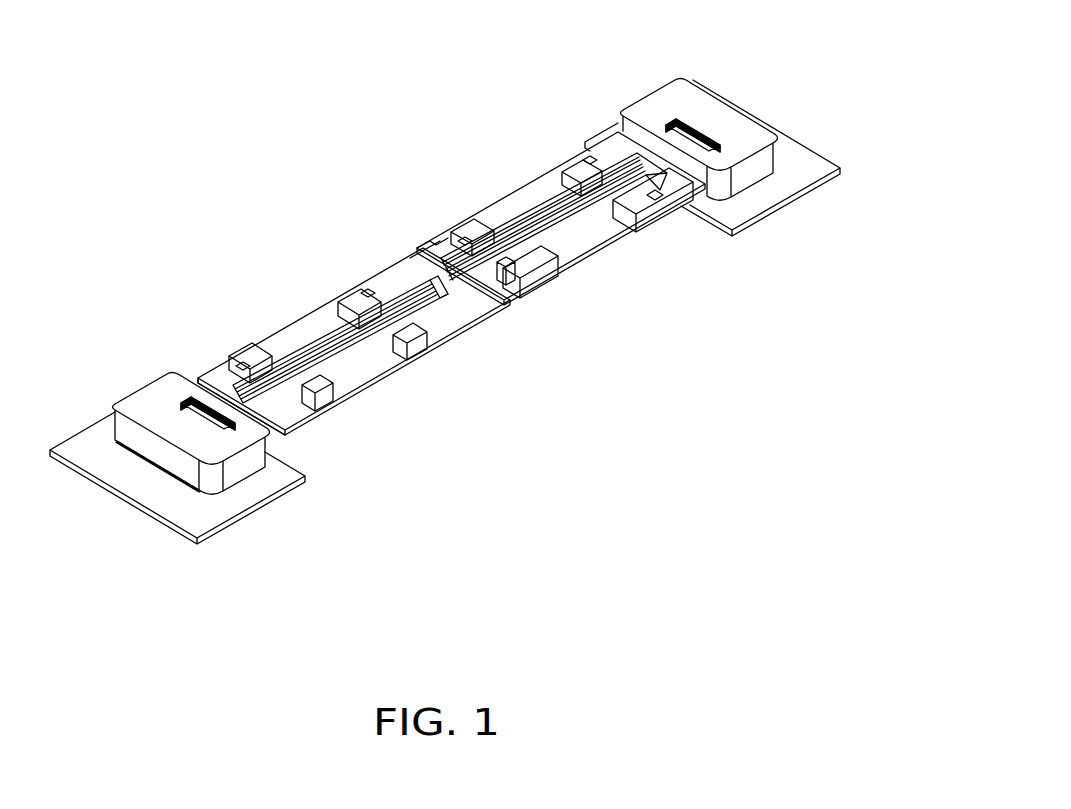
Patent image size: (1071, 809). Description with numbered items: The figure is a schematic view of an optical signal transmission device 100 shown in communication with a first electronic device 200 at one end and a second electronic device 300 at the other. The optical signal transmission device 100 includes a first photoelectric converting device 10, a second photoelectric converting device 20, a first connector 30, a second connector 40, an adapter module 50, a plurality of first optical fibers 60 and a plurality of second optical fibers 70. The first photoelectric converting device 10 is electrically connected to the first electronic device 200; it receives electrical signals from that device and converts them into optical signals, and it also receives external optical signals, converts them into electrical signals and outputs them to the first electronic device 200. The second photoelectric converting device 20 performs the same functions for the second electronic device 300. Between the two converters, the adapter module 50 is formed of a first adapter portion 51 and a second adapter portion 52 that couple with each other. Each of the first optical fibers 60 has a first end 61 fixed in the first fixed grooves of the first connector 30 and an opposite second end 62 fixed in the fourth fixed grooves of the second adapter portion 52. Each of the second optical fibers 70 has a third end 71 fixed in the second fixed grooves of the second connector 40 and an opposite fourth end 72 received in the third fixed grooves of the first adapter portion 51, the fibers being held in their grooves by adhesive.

The optical signal transmission device 100 is at (455, 75).
The first photoelectric converting device 10 is at (662, 93).
The first electronic device 200 is at (803, 153).
The second photoelectric converting device 20 is at (145, 403).
The second electronic device 300 is at (287, 473).
The second connector 40 is at (217, 373).
The first connector 30 is at (575, 168).
The adapter module 50 is at (338, 212).
The first adapter portion 51 is at (397, 267).
The second adapter portion 52 is at (432, 246).
The first optical fibers 60 is at (538, 215).
The first end 61 is at (623, 163).
The second end 62 is at (480, 230).
The second optical fibers 70 is at (323, 335).
The third end 71 is at (258, 352).
The fourth end 72 is at (360, 288).